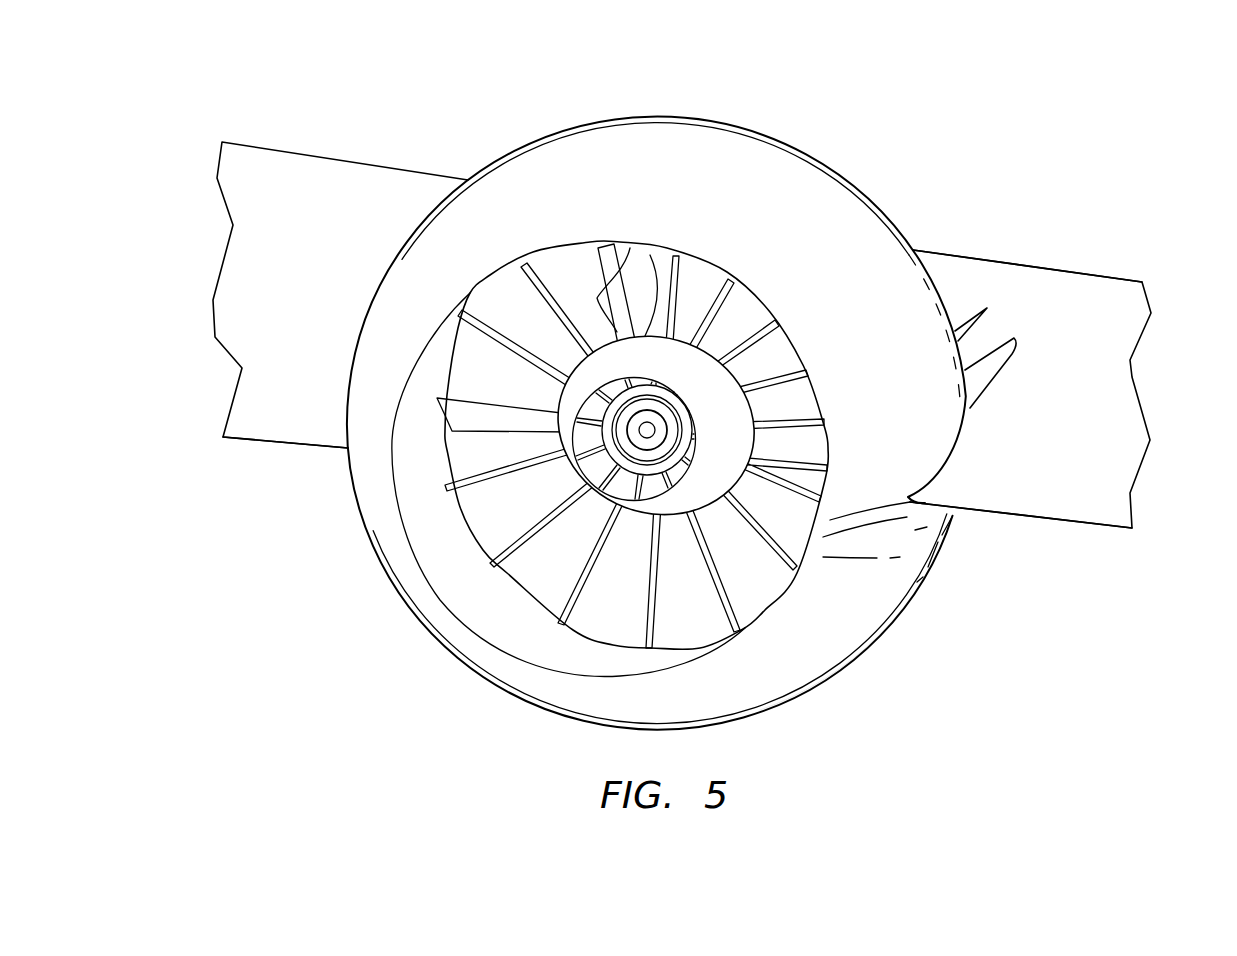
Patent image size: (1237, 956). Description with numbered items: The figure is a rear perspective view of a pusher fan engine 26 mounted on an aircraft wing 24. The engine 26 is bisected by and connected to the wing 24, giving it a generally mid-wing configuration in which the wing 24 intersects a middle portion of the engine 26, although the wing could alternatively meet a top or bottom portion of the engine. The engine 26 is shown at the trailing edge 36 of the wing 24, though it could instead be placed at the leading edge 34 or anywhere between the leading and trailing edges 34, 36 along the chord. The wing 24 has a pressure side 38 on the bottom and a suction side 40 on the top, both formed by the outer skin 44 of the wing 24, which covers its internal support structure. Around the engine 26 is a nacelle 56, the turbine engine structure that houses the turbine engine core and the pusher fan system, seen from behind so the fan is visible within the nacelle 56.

The wing 24 is at (1062, 389).
The pusher fan engine 26 is at (677, 413).
The leading edge 34 is at (340, 306).
The trailing edge 36 is at (271, 450).
The pressure side 38 is at (1059, 522).
The suction side 40 is at (1103, 478).
The outer skin 44 is at (1112, 358).
The nacelle 56 is at (913, 611).